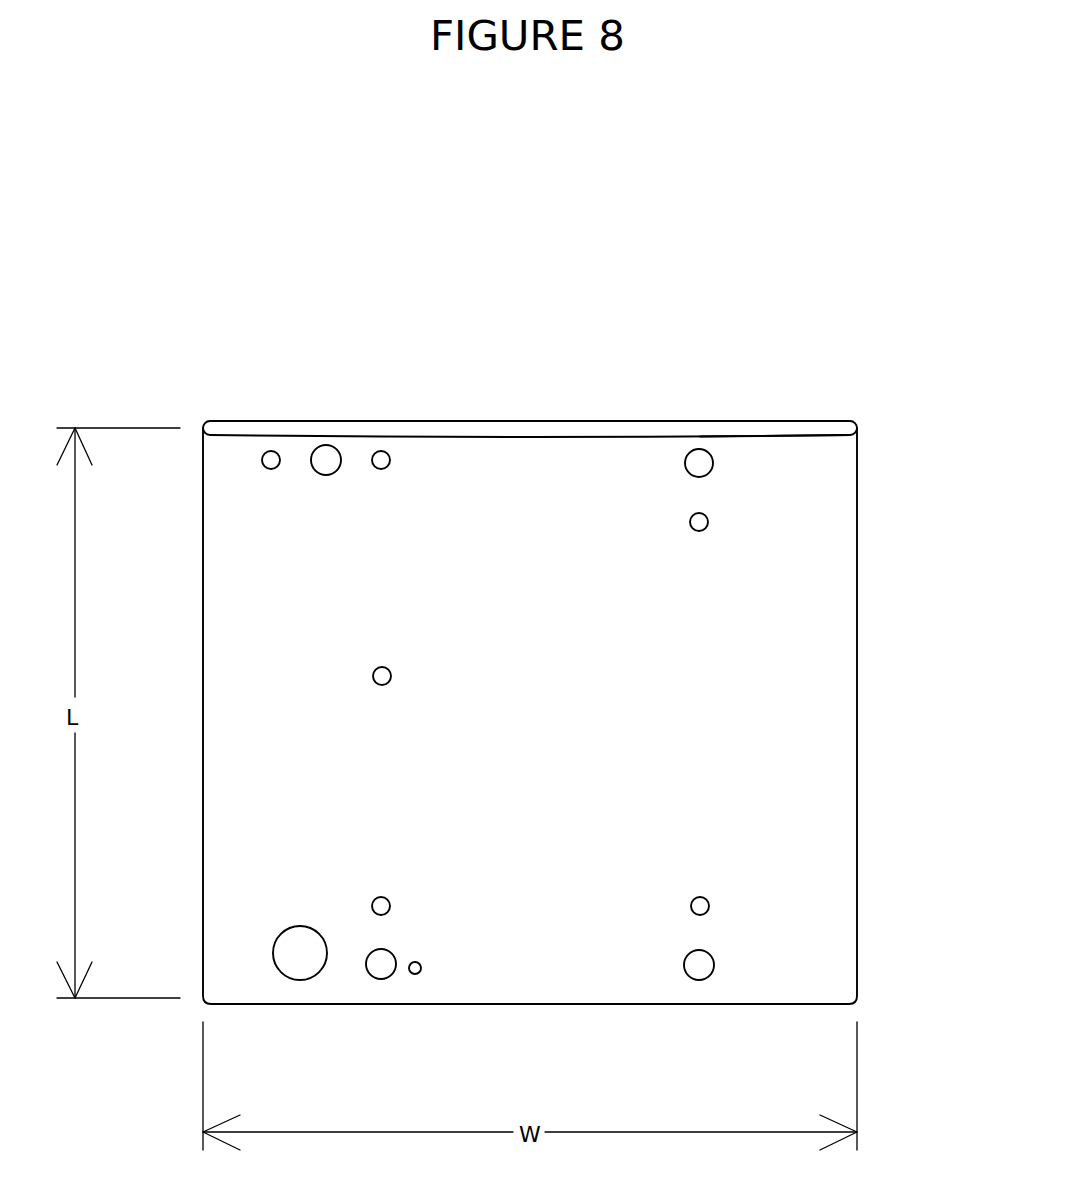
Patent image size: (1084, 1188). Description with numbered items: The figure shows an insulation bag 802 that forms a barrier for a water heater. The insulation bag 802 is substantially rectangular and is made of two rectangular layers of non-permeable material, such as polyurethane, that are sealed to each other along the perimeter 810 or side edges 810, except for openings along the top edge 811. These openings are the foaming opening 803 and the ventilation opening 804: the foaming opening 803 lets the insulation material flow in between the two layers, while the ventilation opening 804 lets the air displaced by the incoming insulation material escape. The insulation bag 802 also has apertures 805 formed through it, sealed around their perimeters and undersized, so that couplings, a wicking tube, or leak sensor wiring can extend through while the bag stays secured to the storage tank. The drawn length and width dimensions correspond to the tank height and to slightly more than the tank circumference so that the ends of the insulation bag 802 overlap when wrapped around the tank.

The insulation bag 802 is at (523, 652).
The foaming opening 803 is at (489, 407).
The ventilation opening 804 is at (764, 414).
The apertures 805 is at (284, 970).
The perimeter 810 is at (203, 618).
The top edge 811 is at (403, 419).